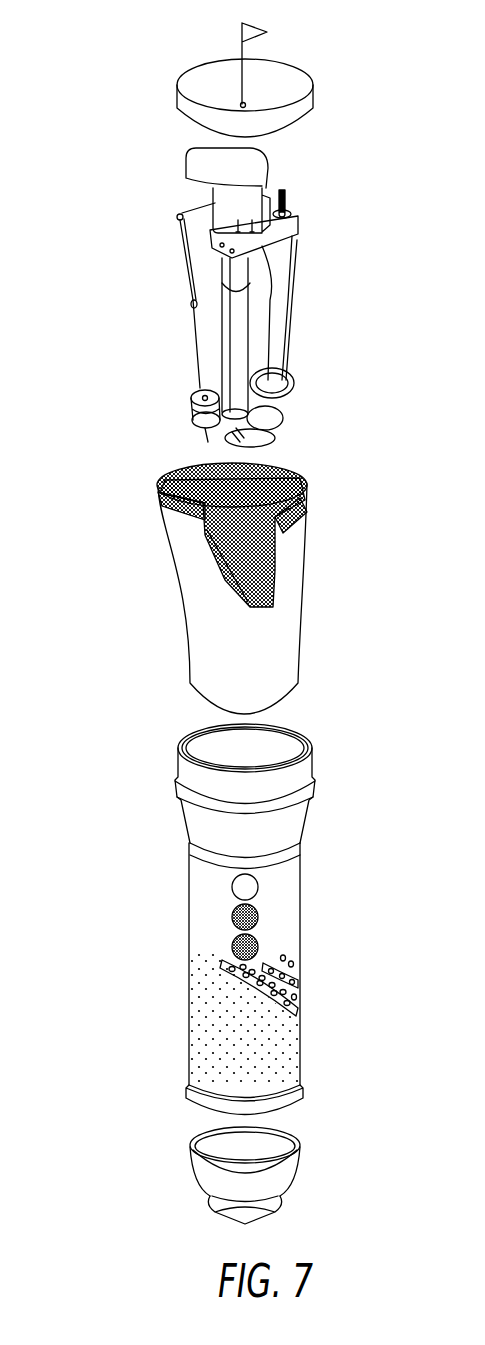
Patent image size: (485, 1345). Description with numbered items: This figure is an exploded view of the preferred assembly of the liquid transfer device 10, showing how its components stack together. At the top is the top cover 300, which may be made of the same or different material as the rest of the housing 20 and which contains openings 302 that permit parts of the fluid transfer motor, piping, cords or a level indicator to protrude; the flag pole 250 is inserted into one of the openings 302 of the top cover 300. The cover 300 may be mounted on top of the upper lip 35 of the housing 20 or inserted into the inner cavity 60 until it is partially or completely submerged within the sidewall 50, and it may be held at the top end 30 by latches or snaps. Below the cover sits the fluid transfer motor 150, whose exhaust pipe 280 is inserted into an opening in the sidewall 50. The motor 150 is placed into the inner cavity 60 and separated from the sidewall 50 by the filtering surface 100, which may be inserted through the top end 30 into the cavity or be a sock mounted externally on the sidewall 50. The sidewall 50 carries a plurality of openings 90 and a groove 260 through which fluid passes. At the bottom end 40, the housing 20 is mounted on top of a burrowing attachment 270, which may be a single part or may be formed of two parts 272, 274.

The liquid transfer device 10 is at (91, 51).
The housing 20 is at (256, 914).
The top end 30 is at (311, 778).
The upper lip 35 is at (302, 760).
The bottom end 40 is at (297, 1112).
The sidewall 50 is at (300, 964).
The inner cavity 60 is at (281, 750).
The plurality of openings 90 is at (291, 965).
The filtering surface 100 is at (173, 603).
The fluid transfer motor 150 is at (165, 273).
The flag pole 250 is at (242, 52).
The groove 260 is at (301, 986).
The burrowing attachment 270 is at (240, 1179).
The part of burrowing attachment 272 is at (267, 1212).
The part of burrowing attachment 274 is at (300, 1172).
The exhaust pipe 280 is at (192, 158).
The top cover 300 is at (292, 88).
The openings 302 is at (247, 105).